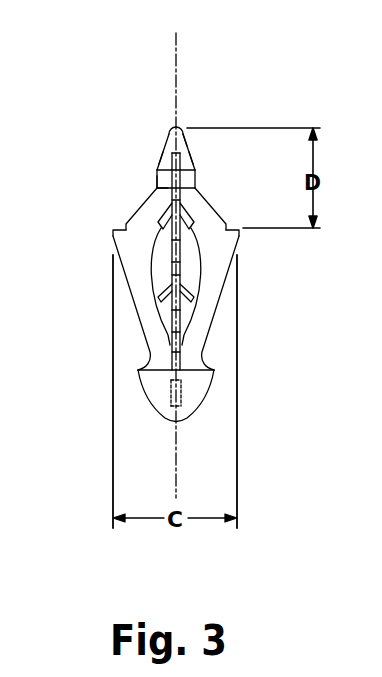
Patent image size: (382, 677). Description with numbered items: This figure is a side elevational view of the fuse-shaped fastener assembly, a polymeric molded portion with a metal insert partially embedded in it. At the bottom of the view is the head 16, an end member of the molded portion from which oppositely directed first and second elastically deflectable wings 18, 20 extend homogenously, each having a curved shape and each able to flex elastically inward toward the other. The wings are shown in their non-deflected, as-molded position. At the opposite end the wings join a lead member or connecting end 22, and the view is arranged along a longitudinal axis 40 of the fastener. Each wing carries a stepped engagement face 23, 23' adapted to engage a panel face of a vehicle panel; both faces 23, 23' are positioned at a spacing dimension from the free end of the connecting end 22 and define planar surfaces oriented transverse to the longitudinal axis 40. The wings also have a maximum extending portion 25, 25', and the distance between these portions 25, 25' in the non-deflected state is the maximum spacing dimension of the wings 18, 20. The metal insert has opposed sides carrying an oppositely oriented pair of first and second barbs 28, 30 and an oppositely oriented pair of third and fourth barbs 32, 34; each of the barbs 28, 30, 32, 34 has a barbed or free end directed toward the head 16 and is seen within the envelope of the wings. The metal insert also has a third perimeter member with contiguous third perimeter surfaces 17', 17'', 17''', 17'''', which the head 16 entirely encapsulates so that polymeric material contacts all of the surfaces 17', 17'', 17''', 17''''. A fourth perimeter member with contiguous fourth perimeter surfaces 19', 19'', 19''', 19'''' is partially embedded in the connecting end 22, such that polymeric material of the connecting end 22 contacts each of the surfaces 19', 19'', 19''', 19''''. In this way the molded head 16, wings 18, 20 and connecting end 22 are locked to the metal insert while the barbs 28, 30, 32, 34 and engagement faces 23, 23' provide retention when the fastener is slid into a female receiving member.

The head 16 is at (190, 403).
The third perimeter surface 17' is at (227, 353).
The third perimeter surface 17'' is at (239, 384).
The third perimeter surface 17''' is at (198, 437).
The third perimeter surface 17'''' is at (112, 408).
The first elastically deflectable wing 18 is at (127, 250).
The fourth perimeter surface 19' is at (114, 155).
The fourth perimeter surface 19'' is at (117, 122).
The fourth perimeter surface 19''' is at (216, 119).
The fourth perimeter surface 19'''' is at (236, 119).
The second elastically deflectable wing 20 is at (222, 258).
The connecting end 22 is at (166, 143).
The stepped engagement face 23 is at (98, 205).
The stepped engagement face 23' is at (242, 202).
The maximum extending portion 25 is at (84, 252).
The maximum extending portion 25' is at (271, 249).
The first barb 28 is at (193, 217).
The second barb 30 is at (195, 300).
The third barb 32 is at (165, 218).
The fourth barb 34 is at (160, 302).
The longitudinal axis 40 is at (178, 72).